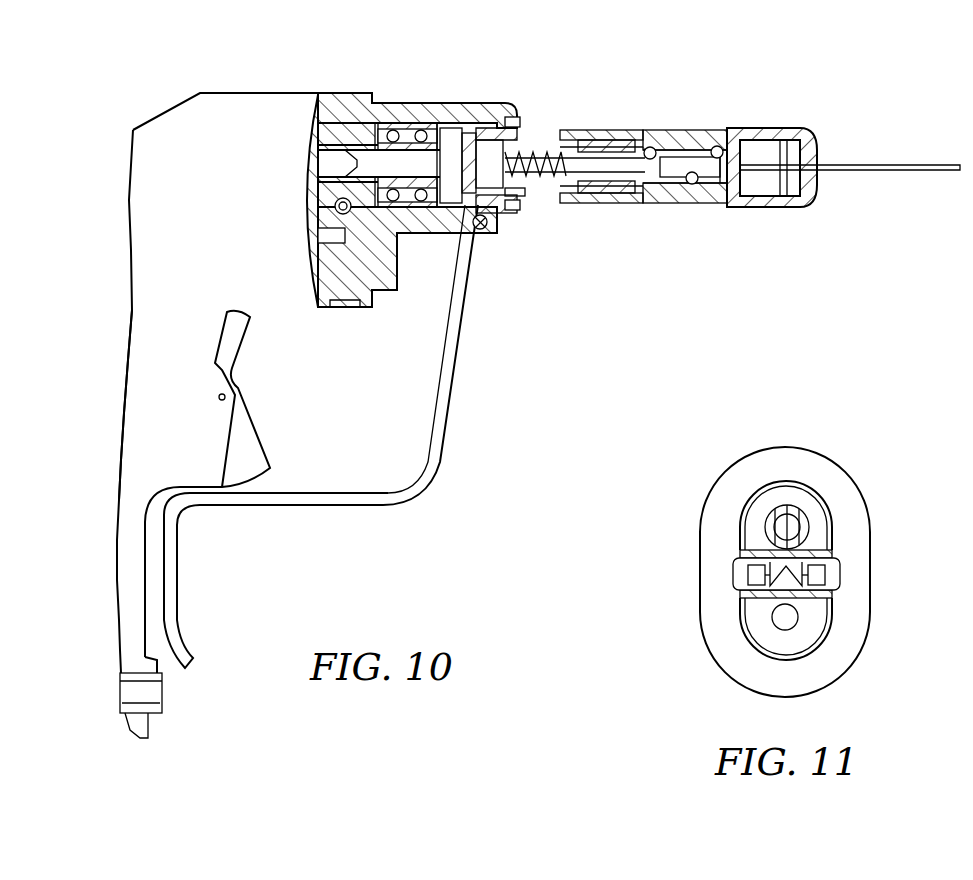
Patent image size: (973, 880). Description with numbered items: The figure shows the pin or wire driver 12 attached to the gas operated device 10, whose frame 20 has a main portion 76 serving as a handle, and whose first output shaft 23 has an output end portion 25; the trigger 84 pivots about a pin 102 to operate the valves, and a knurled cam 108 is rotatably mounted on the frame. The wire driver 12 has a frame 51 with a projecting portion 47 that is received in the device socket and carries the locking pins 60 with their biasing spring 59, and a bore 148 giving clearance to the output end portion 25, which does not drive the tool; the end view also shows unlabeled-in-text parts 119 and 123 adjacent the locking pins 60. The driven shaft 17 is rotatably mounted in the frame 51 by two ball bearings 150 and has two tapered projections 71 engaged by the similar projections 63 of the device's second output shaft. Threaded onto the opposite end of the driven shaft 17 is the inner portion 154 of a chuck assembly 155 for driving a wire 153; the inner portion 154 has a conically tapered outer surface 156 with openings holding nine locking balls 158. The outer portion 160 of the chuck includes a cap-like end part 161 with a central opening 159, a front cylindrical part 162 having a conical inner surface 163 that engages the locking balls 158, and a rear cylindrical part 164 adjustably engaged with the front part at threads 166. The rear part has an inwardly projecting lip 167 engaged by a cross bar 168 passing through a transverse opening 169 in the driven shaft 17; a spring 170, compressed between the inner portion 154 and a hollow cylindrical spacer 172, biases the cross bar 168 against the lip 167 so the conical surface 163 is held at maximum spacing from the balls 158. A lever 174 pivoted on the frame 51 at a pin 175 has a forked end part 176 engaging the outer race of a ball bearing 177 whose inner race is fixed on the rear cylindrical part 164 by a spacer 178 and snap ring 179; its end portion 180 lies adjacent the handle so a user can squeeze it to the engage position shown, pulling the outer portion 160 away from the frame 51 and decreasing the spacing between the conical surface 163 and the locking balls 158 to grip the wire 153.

In FIG. 10, the gas operated device 10 is at (150, 108).
In FIG. 10, the pin or wire driver 12 is at (695, 155).
In FIG. 10, the driven shaft 17 is at (384, 160).
In FIG. 11, the driven shaft 17 is at (789, 519).
In FIG. 10, the frame 20 is at (125, 452).
In FIG. 10, the first output shaft 23 is at (312, 238).
In FIG. 10, the output end portion 25 is at (330, 295).
In FIG. 10, the projecting portion 47 is at (342, 122).
In FIG. 11, the projecting portion 47 is at (818, 512).
In FIG. 10, the frame 51 is at (426, 235).
In FIG. 11, the frame 51 is at (758, 455).
In FIG. 11, the spring 59 is at (799, 594).
In FIG. 10, the locking pins 60 is at (330, 203).
In FIG. 11, the locking pins 60 is at (843, 570).
In FIG. 10, the tapered projections 63 is at (338, 164).
In FIG. 10, the tapered projections 71 is at (332, 176).
In FIG. 11, the tapered projections 71 is at (743, 523).
In FIG. 10, the main portion 76 is at (125, 585).
In FIG. 10, the trigger 84 is at (255, 450).
In FIG. 10, the pin 102 is at (232, 397).
In FIG. 10, the cam 108 is at (158, 702).
In FIG. 11, the plate 119 is at (827, 552).
In FIG. 11, the plate 123 is at (740, 601).
In FIG. 10, the bore 148 is at (347, 282).
In FIG. 11, the bore 148 is at (773, 618).
In FIG. 10, the ball bearings 150 is at (402, 124).
In FIG. 10, the wire 153 is at (918, 164).
In FIG. 10, the inner portion 154 is at (724, 184).
In FIG. 10, the chuck assembly 155 is at (802, 168).
In FIG. 10, the conically tapered outer surface 156 is at (677, 194).
In FIG. 10, the locking balls 158 is at (716, 150).
In FIG. 10, the central opening 159 is at (816, 172).
In FIG. 10, the outer portion 160 is at (770, 210).
In FIG. 10, the cap-like end part 161 is at (808, 145).
In FIG. 10, the front cylindrical part 162 is at (670, 146).
In FIG. 10, the conical inner surface 163 is at (672, 150).
In FIG. 10, the rear cylindrical part 164 is at (573, 130).
In FIG. 10, the threads 166 is at (618, 136).
In FIG. 10, the annular inwardly projecting lip 167 is at (467, 135).
In FIG. 10, the cross bar 168 is at (447, 125).
In FIG. 10, the transverse opening 169 is at (448, 208).
In FIG. 10, the spring 170 is at (567, 190).
In FIG. 10, the hollow cylindrical spacer 172 is at (491, 203).
In FIG. 10, the lever 174 is at (455, 368).
In FIG. 10, the pin 175 is at (481, 229).
In FIG. 10, the forked end part 176 is at (502, 118).
In FIG. 10, the ball bearing 177 is at (513, 120).
In FIG. 10, the spacer 178 is at (515, 218).
In FIG. 10, the snap ring 179 is at (517, 203).
In FIG. 10, the end portion 180 is at (180, 585).